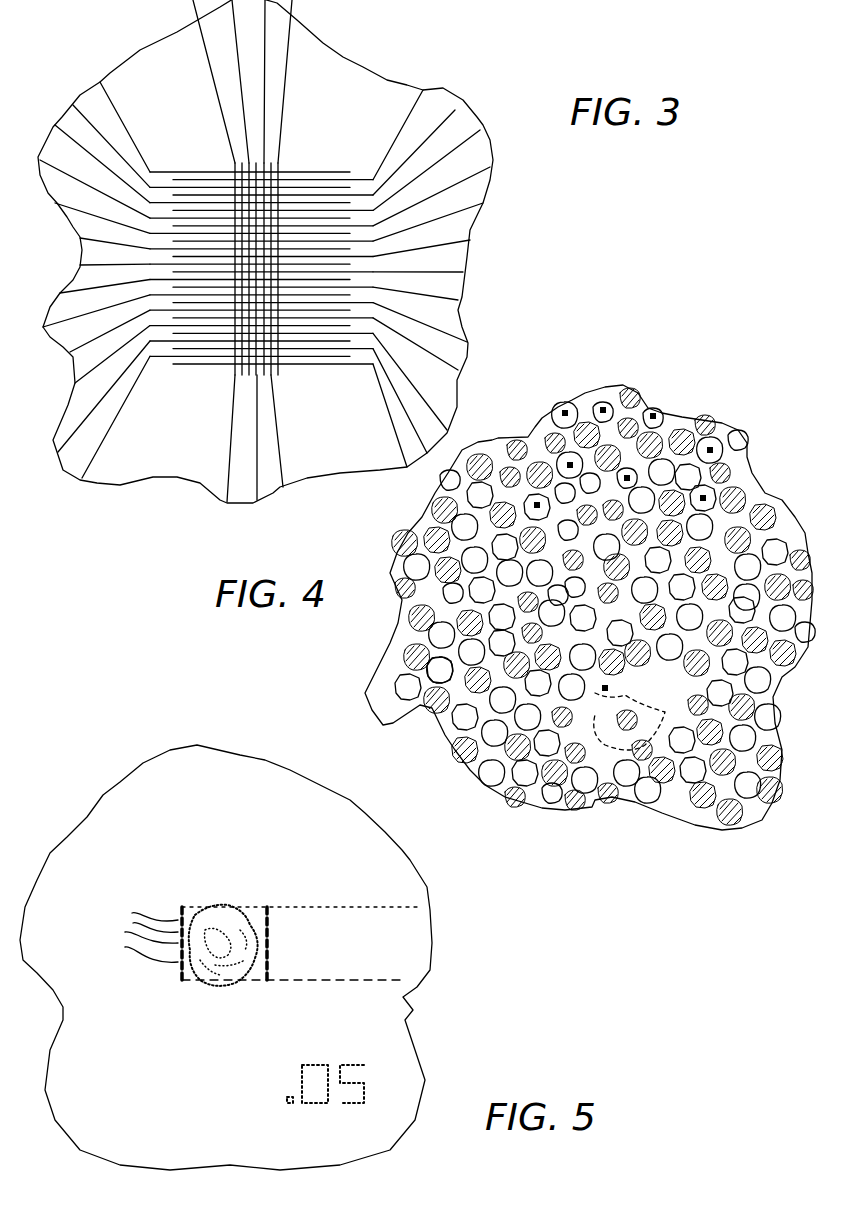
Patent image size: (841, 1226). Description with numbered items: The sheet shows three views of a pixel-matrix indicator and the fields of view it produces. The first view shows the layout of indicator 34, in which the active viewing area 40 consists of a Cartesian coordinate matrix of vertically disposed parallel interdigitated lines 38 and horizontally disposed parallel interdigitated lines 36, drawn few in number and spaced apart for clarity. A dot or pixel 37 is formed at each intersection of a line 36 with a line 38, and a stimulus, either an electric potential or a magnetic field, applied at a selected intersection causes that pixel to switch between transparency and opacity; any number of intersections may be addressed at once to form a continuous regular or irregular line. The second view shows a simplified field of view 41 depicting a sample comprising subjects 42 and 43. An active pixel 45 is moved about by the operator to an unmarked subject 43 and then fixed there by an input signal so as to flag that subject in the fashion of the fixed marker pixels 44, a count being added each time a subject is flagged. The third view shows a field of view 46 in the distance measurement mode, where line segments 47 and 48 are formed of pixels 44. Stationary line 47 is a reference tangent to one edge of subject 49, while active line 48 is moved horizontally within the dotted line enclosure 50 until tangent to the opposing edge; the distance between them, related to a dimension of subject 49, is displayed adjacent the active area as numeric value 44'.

In FIG. 3, the layout of indicator 34 is at (362, 42).
In FIG. 3, the horizontally disposed parallel interdigitated lines 36 is at (470, 165).
In FIG. 3, the pixel 37 is at (232, 163).
In FIG. 3, the vertically disposed parallel interdigitated lines 38 is at (252, 45).
In FIG. 3, the active viewing area 40 is at (318, 164).
In FIG. 4, the field of view 41 is at (683, 392).
In FIG. 4, the subjects 42 is at (692, 800).
In FIG. 4, the subjects 43 is at (440, 683).
In FIG. 4, the fixed marker pixels 44 is at (605, 452).
In FIG. 5, the fixed marker pixels 44 is at (132, 933).
In FIG. 4, the active pixel 45 is at (614, 687).
In FIG. 5, the field of view 46 is at (105, 782).
In FIG. 5, the stationary line 47 is at (177, 978).
In FIG. 5, the active line 48 is at (273, 928).
In FIG. 5, the subject 49 is at (227, 903).
In FIG. 5, the dotted line enclosure 50 is at (340, 977).
In FIG. 5, the numeric value 44' is at (277, 1100).